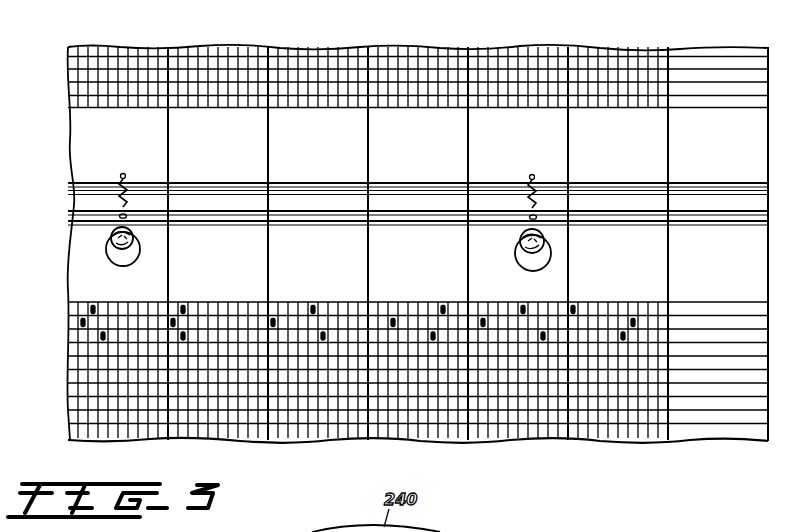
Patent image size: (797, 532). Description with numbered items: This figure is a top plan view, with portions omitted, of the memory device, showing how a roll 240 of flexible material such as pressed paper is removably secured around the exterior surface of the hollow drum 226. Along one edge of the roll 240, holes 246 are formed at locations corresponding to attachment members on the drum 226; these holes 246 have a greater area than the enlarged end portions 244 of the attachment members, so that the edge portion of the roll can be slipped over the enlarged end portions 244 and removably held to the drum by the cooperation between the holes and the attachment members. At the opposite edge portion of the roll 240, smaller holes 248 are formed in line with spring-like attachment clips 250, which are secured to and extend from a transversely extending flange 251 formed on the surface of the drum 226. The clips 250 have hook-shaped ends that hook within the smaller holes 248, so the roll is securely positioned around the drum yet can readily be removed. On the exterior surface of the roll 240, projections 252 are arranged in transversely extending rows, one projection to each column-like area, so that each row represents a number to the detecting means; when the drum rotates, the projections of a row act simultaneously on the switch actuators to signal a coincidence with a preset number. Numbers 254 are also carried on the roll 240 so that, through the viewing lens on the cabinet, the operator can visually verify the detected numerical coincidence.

The roll 240 is at (584, 60).
The hollow drum 226 is at (705, 193).
The enlarged end portions 244 is at (111, 238).
The holes 246 is at (116, 268).
The smaller holes 248 is at (123, 172).
The spring-like attachment clips 250 is at (130, 204).
The transversely extending flange 251 is at (70, 198).
The projections 252 is at (313, 303).
The numbers 254 is at (735, 302).